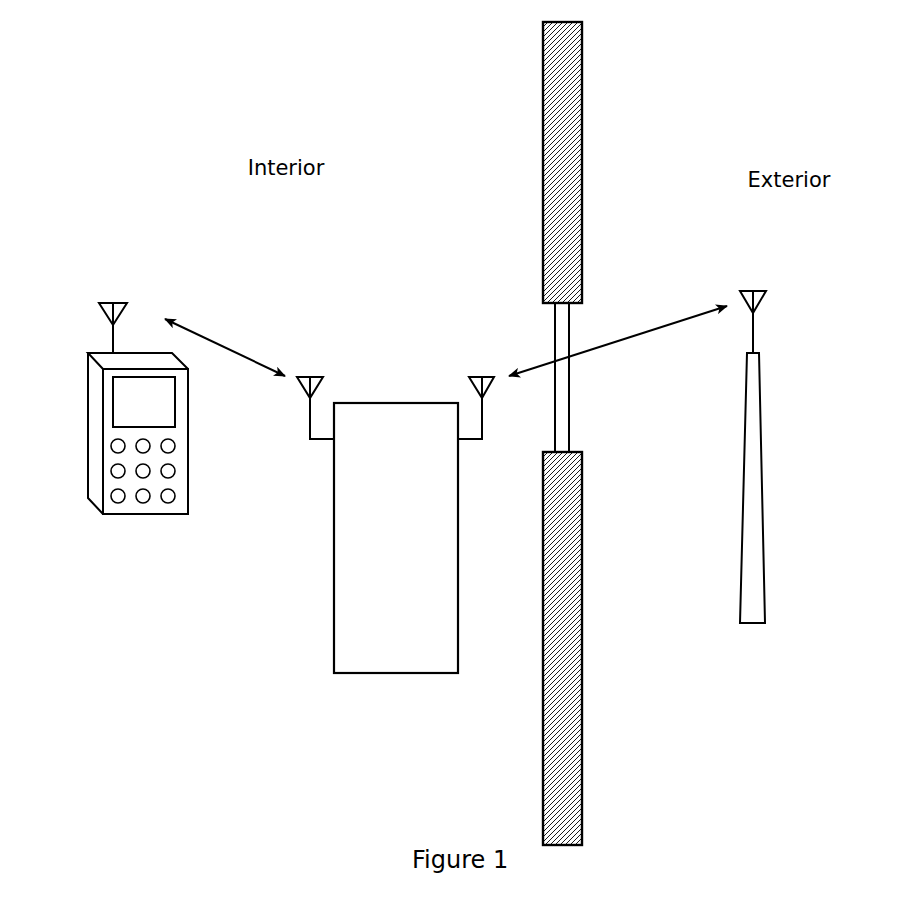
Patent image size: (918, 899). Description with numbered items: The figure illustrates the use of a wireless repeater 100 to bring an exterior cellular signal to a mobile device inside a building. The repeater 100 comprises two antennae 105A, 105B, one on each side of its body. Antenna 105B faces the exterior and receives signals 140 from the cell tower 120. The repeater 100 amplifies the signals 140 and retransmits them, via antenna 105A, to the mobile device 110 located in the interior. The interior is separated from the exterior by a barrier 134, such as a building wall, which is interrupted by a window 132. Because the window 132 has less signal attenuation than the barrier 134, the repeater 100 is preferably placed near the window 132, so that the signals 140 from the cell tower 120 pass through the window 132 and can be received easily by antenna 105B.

The wireless repeater 100 is at (396, 538).
The antenna 105A is at (310, 359).
The antenna 105B is at (451, 359).
The mobile device 110 is at (111, 457).
The cell tower 120 is at (802, 457).
The window 132 is at (621, 390).
The barrier 134 is at (619, 433).
The signals 140 is at (618, 303).